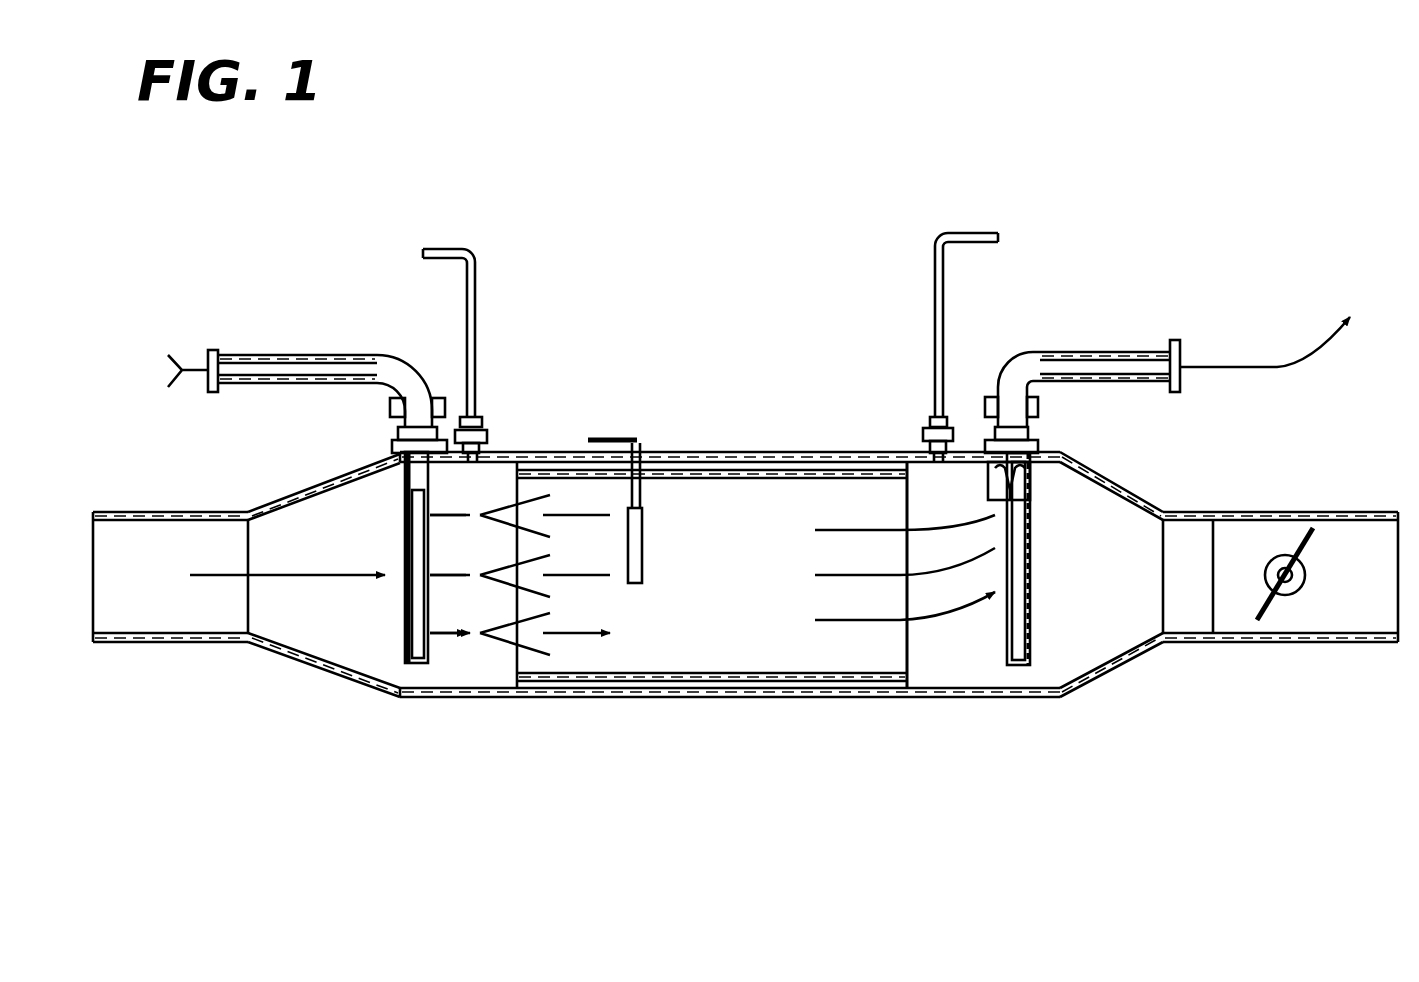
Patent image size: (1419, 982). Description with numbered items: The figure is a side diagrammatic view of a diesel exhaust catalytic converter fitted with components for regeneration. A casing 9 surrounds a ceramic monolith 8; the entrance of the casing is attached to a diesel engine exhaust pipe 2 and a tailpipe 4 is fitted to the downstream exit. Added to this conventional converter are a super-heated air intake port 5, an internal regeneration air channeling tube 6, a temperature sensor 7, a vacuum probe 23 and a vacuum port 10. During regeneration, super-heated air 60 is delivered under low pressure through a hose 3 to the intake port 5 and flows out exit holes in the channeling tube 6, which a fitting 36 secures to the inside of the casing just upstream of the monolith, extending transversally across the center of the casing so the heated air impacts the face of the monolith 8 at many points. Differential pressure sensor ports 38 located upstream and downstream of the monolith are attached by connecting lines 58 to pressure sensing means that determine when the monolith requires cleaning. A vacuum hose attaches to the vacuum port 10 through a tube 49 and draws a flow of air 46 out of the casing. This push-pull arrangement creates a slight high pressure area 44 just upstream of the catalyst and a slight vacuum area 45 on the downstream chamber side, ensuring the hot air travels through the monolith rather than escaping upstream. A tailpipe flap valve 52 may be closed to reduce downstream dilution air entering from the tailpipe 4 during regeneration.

The diesel engine exhaust pipe 2 is at (103, 512).
The hose 3 is at (287, 355).
The tailpipe 4 is at (1353, 510).
The super-heated air intake port 5 is at (396, 453).
The internal regeneration air channeling tube 6 is at (266, 579).
The temperature sensor 7 is at (643, 520).
The ceramic monolith 8 is at (738, 487).
The casing 9 is at (735, 697).
The vacuum port 10 is at (1040, 445).
The vacuum probe 23 is at (1030, 605).
The fitting 36 is at (392, 443).
The differential pressure sensor ports 38 is at (487, 445).
The slight high pressure area 44 is at (447, 668).
The slight vacuum area 45 is at (983, 640).
The flow of air 46 is at (1280, 322).
The tube 49 is at (1046, 352).
The tailpipe flap valve 52 is at (1270, 605).
The connecting lines 58 is at (455, 250).
The super-heated air 60 is at (161, 373).